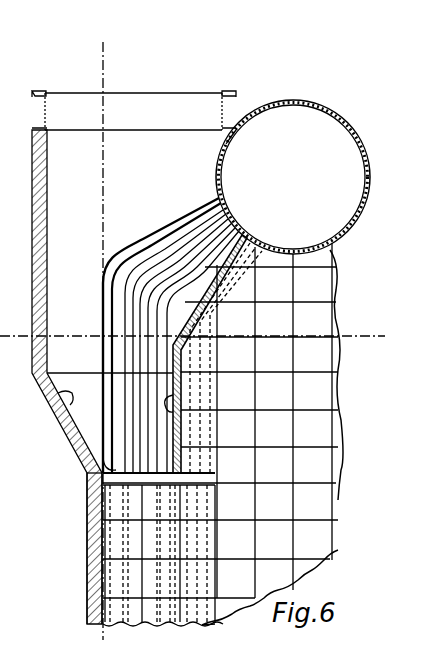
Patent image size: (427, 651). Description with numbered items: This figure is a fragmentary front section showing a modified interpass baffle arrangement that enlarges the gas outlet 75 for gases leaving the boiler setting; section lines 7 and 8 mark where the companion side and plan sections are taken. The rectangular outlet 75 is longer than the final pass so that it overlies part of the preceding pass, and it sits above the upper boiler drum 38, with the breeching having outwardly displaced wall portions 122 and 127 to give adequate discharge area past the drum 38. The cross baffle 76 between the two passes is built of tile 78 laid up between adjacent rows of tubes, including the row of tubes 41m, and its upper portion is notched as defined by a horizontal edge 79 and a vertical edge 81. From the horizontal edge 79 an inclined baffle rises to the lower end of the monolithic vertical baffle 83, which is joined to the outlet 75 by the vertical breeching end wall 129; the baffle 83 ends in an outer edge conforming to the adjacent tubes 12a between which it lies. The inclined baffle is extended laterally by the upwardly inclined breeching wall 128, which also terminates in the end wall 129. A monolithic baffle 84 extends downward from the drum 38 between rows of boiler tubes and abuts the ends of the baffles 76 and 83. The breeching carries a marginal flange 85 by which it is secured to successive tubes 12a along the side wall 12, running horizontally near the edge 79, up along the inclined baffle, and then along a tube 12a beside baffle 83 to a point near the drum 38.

The section line 7- 7 is at (98, 45).
The section line 8- 8 is at (12, 322).
The gas outlet 75 is at (156, 105).
The vertical breeching end wall 129 is at (158, 168).
The upper boiler drum 38 is at (320, 110).
The outwardly displaced breeching wall portion 127 is at (48, 217).
The side wall 12 is at (88, 550).
The tubes 12a is at (103, 355).
The upwardly inclined breeching wall 128 is at (90, 424).
The outwardly displaced breeching wall portion 122 is at (62, 438).
The horizontal baffle edge 79 is at (86, 471).
The marginal flange 85 is at (87, 492).
The monolithic vertical baffle 83 is at (65, 260).
The boiler tubes 41m is at (157, 332).
The monolithic baffle 84 is at (201, 246).
The vertical baffle edge 81 is at (176, 400).
The cross baffle 76 is at (285, 433).
The tile 78 is at (314, 498).